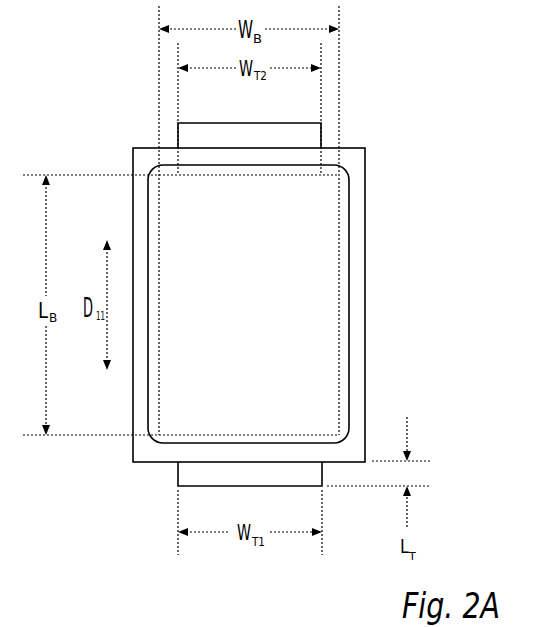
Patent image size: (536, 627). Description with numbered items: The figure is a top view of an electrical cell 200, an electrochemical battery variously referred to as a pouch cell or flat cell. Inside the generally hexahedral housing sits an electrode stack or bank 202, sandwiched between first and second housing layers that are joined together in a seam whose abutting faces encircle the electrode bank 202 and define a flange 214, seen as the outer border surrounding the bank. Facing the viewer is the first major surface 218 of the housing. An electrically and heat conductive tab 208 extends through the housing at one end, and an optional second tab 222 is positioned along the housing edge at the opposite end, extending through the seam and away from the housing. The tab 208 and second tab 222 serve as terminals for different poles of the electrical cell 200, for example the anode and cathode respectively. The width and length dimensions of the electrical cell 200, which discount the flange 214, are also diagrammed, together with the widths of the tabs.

The electrical cell 200 is at (398, 141).
The electrode stack or bank 202 is at (342, 238).
The electrically and heat conductive tab 208 is at (178, 474).
The flange 214 is at (361, 313).
The first major surface 218 is at (263, 300).
The second tab 222 is at (248, 124).